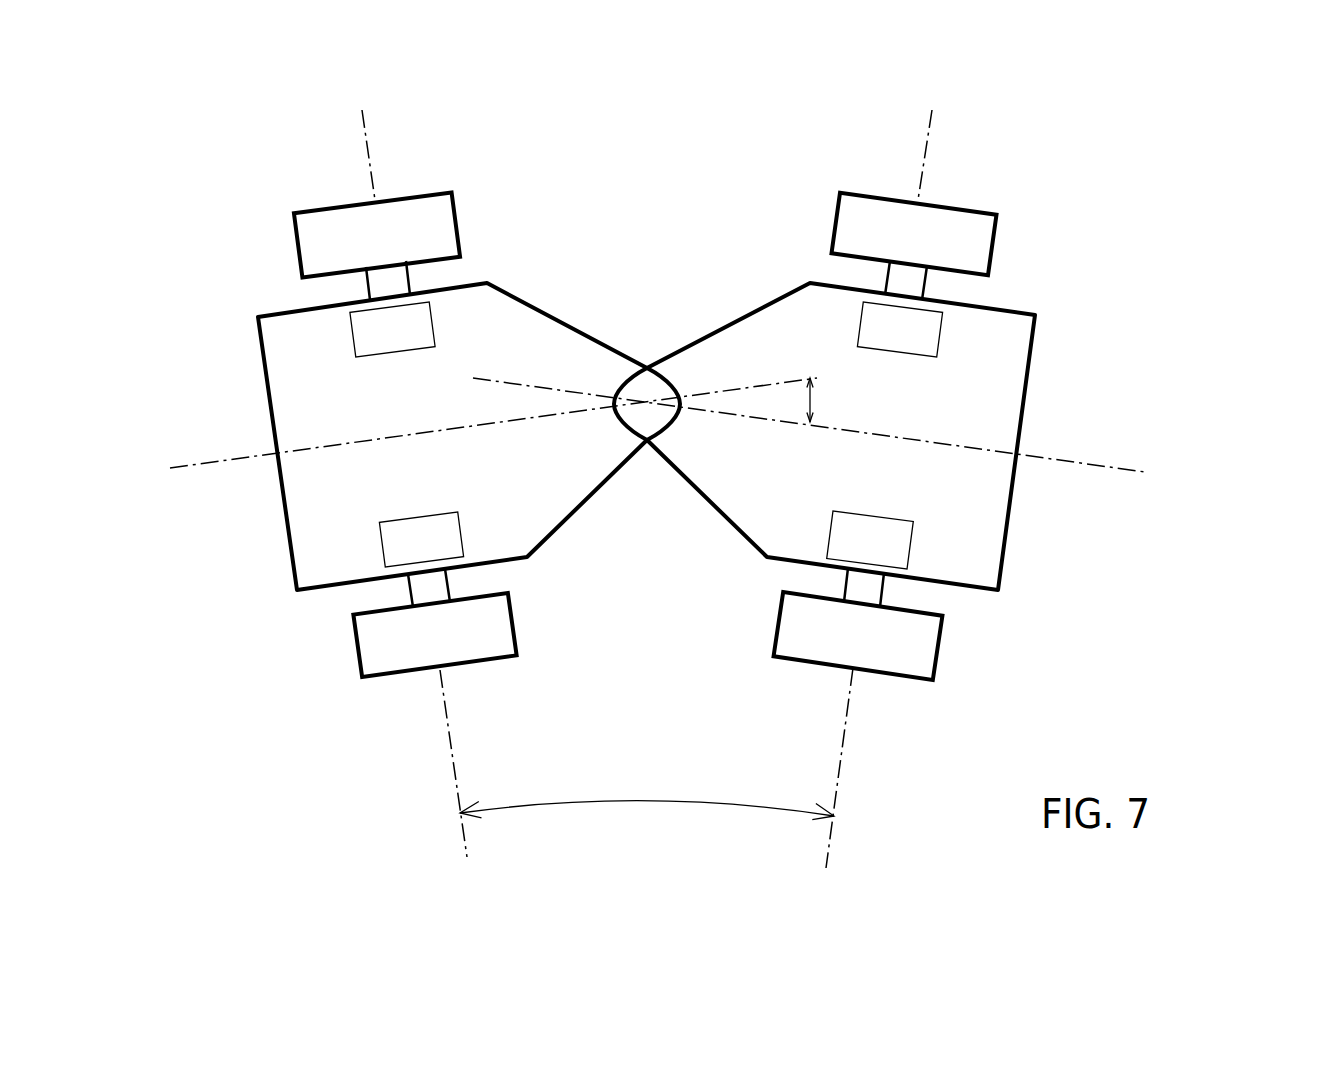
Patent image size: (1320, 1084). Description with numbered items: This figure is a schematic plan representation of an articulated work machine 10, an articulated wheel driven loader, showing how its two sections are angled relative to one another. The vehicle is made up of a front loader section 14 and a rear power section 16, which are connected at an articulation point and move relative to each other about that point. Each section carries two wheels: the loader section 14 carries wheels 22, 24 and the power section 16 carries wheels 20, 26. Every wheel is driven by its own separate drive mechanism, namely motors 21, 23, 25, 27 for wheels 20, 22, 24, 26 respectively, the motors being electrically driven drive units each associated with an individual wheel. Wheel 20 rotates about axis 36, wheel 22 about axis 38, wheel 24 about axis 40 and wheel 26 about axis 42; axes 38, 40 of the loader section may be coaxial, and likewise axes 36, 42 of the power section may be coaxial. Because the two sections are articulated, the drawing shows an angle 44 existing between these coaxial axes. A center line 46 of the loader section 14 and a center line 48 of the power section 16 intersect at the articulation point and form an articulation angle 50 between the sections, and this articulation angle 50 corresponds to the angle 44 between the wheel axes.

The work machine 10 is at (1152, 170).
The loader section 14 is at (185, 382).
The power section 16 is at (1155, 355).
The wheel 20 is at (936, 666).
The motor 21 is at (854, 554).
The wheel 22 is at (518, 638).
The motor 23 is at (406, 553).
The wheel 24 is at (462, 237).
The motor 25 is at (377, 343).
The wheel 26 is at (993, 255).
The motor 27 is at (884, 343).
The axis 36 is at (843, 752).
The axis 38 is at (453, 747).
The axis 40 is at (368, 143).
The axis 42 is at (927, 145).
The angle 44 is at (643, 802).
The center line 46 is at (227, 462).
The center line 48 is at (1081, 464).
The articulation angle 50 is at (812, 400).